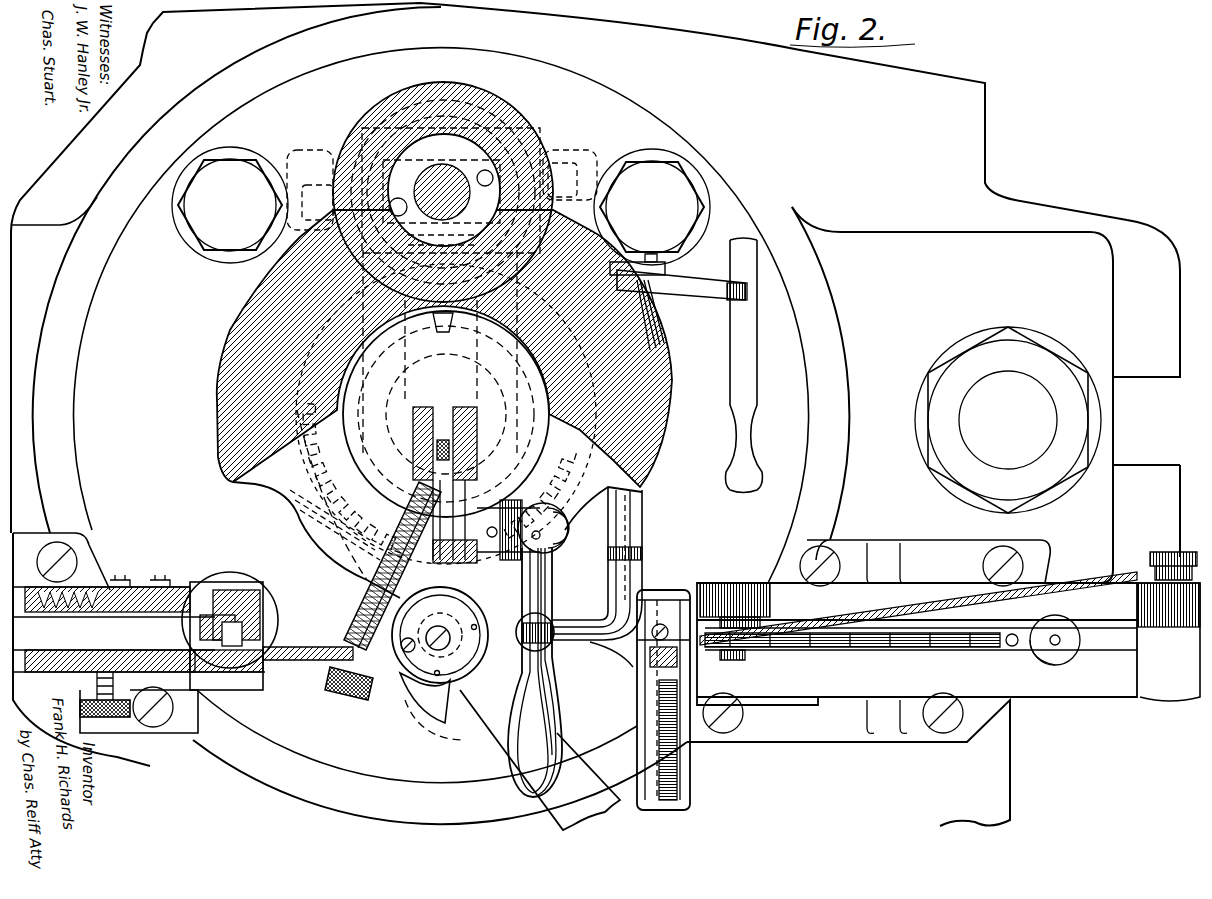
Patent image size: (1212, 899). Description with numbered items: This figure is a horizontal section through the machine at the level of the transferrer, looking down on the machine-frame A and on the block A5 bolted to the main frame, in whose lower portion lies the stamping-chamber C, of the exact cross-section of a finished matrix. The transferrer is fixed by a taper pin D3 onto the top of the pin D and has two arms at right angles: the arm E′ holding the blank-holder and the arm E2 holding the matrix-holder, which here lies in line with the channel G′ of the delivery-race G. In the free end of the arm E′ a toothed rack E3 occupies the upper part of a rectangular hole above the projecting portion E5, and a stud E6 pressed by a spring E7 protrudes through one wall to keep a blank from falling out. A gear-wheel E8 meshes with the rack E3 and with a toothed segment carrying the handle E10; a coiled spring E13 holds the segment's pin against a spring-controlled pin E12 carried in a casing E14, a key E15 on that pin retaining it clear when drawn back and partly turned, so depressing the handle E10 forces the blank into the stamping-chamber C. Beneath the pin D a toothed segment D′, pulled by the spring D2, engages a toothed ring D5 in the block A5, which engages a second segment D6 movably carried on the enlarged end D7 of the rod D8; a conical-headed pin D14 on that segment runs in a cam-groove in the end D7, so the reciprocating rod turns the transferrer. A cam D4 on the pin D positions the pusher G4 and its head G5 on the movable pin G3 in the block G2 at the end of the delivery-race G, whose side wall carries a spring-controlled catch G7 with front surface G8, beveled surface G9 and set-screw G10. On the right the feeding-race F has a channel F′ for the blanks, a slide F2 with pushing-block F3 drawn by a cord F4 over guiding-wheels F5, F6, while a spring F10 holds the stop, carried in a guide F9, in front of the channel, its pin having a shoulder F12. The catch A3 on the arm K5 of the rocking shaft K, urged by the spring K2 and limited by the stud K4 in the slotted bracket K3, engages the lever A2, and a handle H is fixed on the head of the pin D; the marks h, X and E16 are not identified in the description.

The frame A is at (88, 470).
The lever A2 is at (740, 372).
The catch A3 is at (757, 292).
The frame-block A5 is at (748, 450).
The stamping-chamber C is at (342, 425).
The pin D is at (605, 460).
The toothed segment D′ is at (352, 582).
The spring D2 is at (412, 662).
The taper pin D3 is at (448, 715).
The cam D4 is at (432, 690).
The toothed ring D5 is at (300, 494).
The second segment D6 is at (548, 172).
The enlarged end D7 is at (520, 160).
The rod D8 is at (457, 165).
The conical-headed pin D14 is at (372, 155).
The blank-holder arm E′ is at (433, 473).
The matrix-holder arm E2 is at (380, 540).
The toothed rack E3 is at (443, 405).
The projecting portion E5 is at (415, 420).
The stud E6 is at (470, 420).
The spring E7 is at (478, 440).
The gear-wheel E8 is at (478, 473).
The handle E10 is at (558, 703).
The spring-controlled pin E12 is at (440, 492).
The coiled spring E13 is at (330, 550).
The casing E14 is at (425, 530).
The offset or key E15 is at (568, 500).
The collar E16 is at (548, 614).
The feeding-race F is at (862, 637).
The channel F′ is at (1112, 640).
The slide F2 is at (1030, 650).
The pushing-block F3 is at (958, 645).
The cord F4 is at (1060, 590).
The guiding-wheel F5 is at (748, 660).
The guiding-wheel F6 is at (1150, 562).
The guide F9 is at (692, 797).
The spring F10 is at (692, 770).
The shoulder F12 is at (668, 640).
The delivery-race G is at (72, 673).
The channel G′ is at (76, 633).
The block G2 is at (222, 690).
The movable pin G3 is at (352, 693).
The pusher G4 is at (330, 661).
The pusher-head G5 is at (290, 690).
The spring-controlled catch G7 is at (135, 590).
The front surface G8 is at (210, 578).
The beveled surface G9 is at (240, 600).
The set-screw G10 is at (162, 588).
The handle H is at (540, 689).
The stem casing h is at (663, 713).
The rocking shaft K is at (662, 386).
The spring K2 is at (722, 365).
The bracket K3 is at (640, 262).
The stud K4 is at (660, 262).
The arm K5 is at (668, 272).
The axis X is at (285, 690).